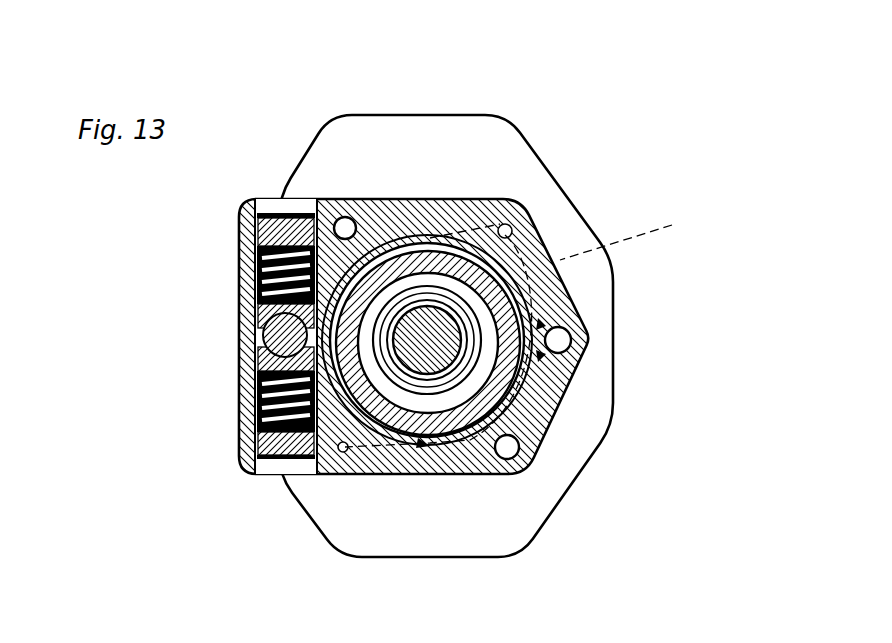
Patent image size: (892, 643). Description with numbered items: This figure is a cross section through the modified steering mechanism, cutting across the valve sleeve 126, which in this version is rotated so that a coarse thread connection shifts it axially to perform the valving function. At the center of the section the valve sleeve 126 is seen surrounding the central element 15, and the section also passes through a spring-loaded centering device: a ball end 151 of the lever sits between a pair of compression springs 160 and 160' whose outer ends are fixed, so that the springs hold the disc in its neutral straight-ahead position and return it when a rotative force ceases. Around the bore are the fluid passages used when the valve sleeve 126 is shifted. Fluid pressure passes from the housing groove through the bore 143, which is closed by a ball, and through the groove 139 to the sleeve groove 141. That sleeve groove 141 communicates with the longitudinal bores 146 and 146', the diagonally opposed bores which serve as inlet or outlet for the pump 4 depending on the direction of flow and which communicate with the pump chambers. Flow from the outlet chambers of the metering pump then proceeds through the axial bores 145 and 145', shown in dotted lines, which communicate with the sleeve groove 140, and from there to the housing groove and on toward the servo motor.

The pump 4 is at (462, 45).
The pin 15 is at (431, 330).
The valve sleeve 126 is at (392, 257).
The groove 139 is at (533, 369).
The sleeve groove 140 is at (632, 237).
The sleeve groove 141 is at (242, 70).
The bore 143 is at (560, 340).
The axial bore 145 is at (326, 529).
The axial bore 145' is at (501, 165).
The longitudinal bore 146 is at (304, 149).
The longitudinal bore 146' is at (498, 526).
The ball end 151 is at (262, 324).
The compression spring 160 is at (236, 396).
The compression spring 160' is at (237, 270).